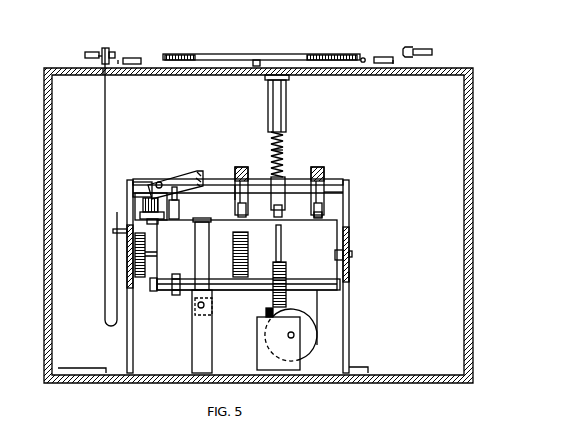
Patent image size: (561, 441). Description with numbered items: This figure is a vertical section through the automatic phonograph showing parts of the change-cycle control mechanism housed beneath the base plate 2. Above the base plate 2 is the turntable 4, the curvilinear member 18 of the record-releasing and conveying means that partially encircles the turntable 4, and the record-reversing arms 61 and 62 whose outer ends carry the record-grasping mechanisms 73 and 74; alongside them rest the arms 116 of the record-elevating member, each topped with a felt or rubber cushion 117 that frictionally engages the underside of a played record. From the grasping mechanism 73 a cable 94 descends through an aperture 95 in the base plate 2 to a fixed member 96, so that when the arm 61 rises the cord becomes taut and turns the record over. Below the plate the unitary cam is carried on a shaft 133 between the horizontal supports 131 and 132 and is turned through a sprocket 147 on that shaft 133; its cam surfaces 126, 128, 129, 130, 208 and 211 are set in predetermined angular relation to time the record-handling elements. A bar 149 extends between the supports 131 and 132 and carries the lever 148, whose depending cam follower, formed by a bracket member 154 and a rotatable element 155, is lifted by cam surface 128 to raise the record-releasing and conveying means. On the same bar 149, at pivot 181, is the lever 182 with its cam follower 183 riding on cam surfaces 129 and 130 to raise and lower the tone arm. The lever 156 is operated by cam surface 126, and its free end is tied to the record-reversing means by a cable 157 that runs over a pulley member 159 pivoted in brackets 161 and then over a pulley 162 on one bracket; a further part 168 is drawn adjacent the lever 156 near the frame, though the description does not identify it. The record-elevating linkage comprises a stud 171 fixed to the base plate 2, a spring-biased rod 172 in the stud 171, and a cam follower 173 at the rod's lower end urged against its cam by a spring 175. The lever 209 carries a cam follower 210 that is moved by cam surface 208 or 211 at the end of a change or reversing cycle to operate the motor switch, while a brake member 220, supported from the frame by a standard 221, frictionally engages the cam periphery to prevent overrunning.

The base plate 2 is at (70, 68).
The turntable 4 is at (270, 54).
The curvilinear member 18 is at (361, 58).
The arm 61 is at (90, 52).
The arm 62 is at (424, 49).
The record-grasping mechanism 73 is at (106, 48).
The record-grasping mechanism 74 is at (409, 47).
The cable 94 is at (105, 118).
The aperture 95 is at (103, 76).
The fixed member 96 is at (116, 231).
The arms 116 is at (120, 62).
The cushion 117 is at (136, 58).
The cam surface 126 is at (324, 214).
The cam surface 128 is at (248, 245).
The cam surface 129 is at (179, 208).
The cam surface 130 is at (176, 295).
The horizontal support 131 is at (127, 280).
The horizontal support 132 is at (350, 280).
The shaft 133 is at (352, 255).
The sprocket 147 is at (135, 277).
The lever 148 is at (240, 167).
The bar 149 is at (346, 180).
The bracket member 154 is at (235, 190).
The rotatable element 155 is at (236, 226).
The lever 156 is at (318, 167).
The cable 157 is at (265, 298).
The pulley member 159 is at (317, 345).
The brackets 161 is at (257, 346).
The pulley 162 is at (266, 312).
The stop 168 is at (326, 195).
The stud 171 is at (286, 98).
The spring-biased rod 172 is at (283, 135).
The cam follower 173 is at (284, 190).
The spring 175 is at (284, 150).
The pivot 181 is at (159, 182).
The lever 182 is at (185, 177).
The cam follower 183 is at (148, 190).
The cam surface 208 is at (154, 291).
The lever 209 is at (143, 201).
The cam follower 210 is at (140, 215).
The cam surface 211 is at (160, 222).
The brake member 220 is at (202, 257).
The standard 221 is at (192, 340).